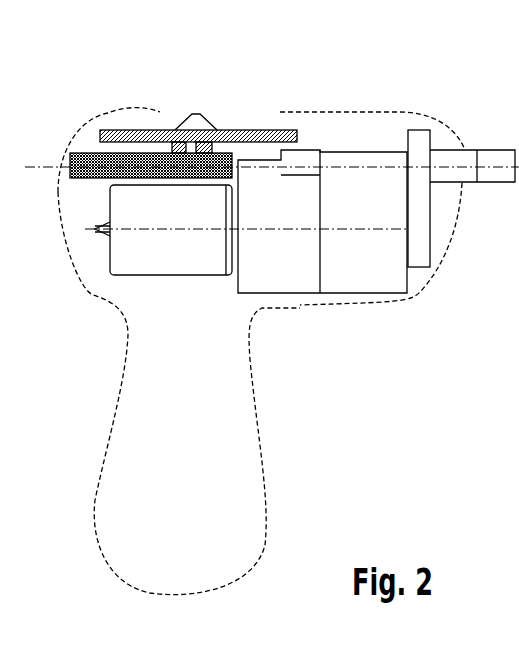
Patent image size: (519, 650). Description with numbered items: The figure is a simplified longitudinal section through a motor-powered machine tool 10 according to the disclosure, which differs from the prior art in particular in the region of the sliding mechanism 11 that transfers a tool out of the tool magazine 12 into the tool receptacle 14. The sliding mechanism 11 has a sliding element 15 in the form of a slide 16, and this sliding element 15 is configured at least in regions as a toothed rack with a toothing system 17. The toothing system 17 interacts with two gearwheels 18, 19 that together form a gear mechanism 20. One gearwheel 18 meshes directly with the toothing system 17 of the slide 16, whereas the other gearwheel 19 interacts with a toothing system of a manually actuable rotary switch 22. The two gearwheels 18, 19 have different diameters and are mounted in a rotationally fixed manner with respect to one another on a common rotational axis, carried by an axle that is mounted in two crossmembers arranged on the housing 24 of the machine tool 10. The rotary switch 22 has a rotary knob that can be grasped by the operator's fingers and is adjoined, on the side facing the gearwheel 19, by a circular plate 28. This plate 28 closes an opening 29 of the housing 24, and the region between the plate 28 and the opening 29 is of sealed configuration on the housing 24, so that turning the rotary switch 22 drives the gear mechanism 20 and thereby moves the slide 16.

The machine tool 10 is at (65, 487).
The sliding mechanism 11 is at (235, 100).
The tool magazine 12 is at (366, 270).
The tool receptacle 14 is at (475, 140).
The sliding element 15 is at (273, 113).
The slide 16 is at (273, 113).
The toothing system 17 is at (105, 160).
The gearwheel 18 is at (219, 138).
The gearwheel 19 is at (177, 138).
The gear mechanism 20 is at (162, 142).
The rotary switch 22 is at (192, 113).
The housing 24 is at (388, 111).
The plate 28 is at (234, 157).
The opening 29 is at (243, 158).